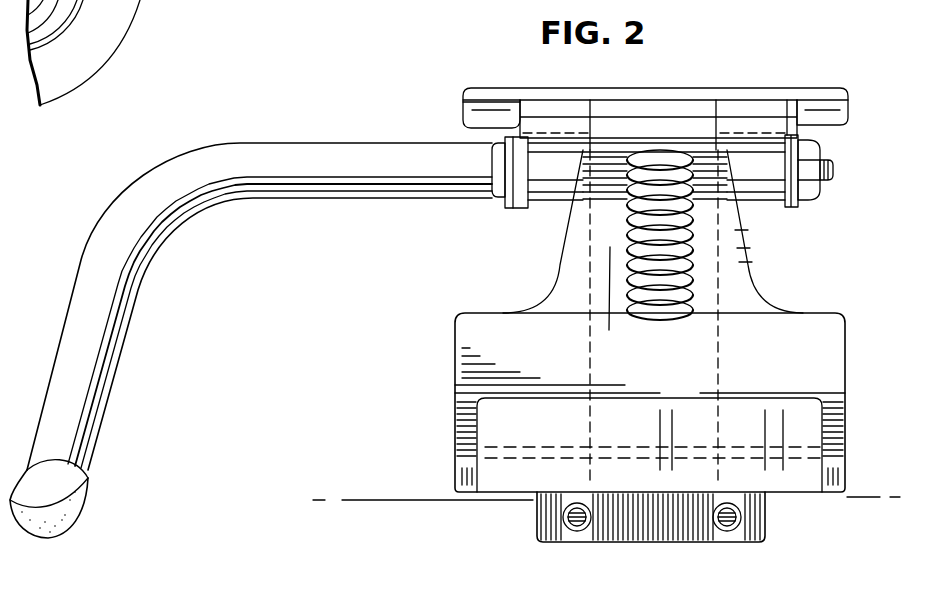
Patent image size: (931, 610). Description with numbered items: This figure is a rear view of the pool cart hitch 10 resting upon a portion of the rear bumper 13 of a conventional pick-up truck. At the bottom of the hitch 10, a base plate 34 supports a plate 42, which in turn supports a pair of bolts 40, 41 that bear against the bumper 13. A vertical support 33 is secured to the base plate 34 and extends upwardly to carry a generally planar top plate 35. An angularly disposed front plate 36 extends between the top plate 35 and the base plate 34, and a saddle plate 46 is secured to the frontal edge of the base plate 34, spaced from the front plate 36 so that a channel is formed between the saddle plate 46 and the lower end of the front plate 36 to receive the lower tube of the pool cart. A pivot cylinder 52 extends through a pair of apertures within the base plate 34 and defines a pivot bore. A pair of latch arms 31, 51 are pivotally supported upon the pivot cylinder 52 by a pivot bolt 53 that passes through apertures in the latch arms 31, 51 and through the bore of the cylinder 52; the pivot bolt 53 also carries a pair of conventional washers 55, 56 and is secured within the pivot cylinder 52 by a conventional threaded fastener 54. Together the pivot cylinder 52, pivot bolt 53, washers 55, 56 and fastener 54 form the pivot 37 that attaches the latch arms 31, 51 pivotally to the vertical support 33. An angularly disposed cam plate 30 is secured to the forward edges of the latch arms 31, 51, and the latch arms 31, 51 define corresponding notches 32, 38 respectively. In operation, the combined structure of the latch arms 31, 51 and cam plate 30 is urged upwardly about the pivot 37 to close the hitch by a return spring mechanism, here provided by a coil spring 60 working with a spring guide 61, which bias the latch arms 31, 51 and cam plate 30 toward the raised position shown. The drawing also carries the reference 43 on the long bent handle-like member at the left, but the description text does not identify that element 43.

The pool cart hitch 10 is at (276, 398).
The rear bumper 13 is at (362, 500).
The cam plate 30 is at (697, 130).
The latch arm 31 is at (520, 210).
The notch 32 is at (523, 107).
The vertical support 33 is at (587, 298).
The base plate 34 is at (587, 472).
The top plate 35 is at (663, 87).
The front plate 36 is at (790, 295).
The pivot 37 is at (492, 168).
The notch 38 is at (793, 100).
The bolt 40 is at (595, 533).
The bolt 41 is at (718, 533).
The plate 42 is at (660, 520).
The handle 43 is at (118, 276).
The saddle plate 46 is at (775, 400).
The latch arm 51 is at (795, 210).
The pivot cylinder 52 is at (548, 197).
The pivot bolt 53 is at (832, 170).
The threaded fastener 54 is at (820, 195).
The washer 55 is at (510, 208).
The washer 56 is at (812, 205).
The coil spring 60 is at (617, 332).
The spring guide 61 is at (673, 275).